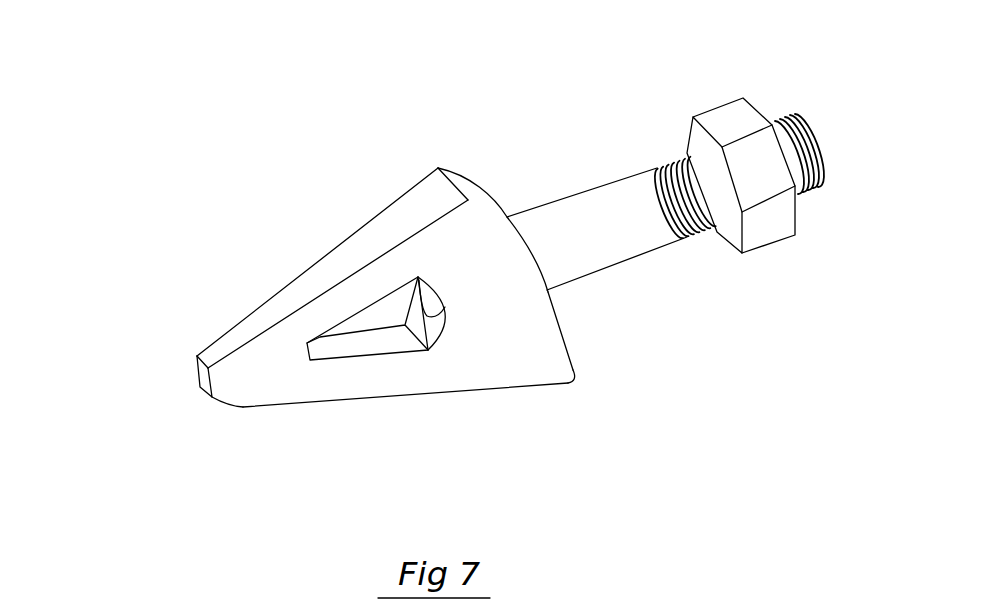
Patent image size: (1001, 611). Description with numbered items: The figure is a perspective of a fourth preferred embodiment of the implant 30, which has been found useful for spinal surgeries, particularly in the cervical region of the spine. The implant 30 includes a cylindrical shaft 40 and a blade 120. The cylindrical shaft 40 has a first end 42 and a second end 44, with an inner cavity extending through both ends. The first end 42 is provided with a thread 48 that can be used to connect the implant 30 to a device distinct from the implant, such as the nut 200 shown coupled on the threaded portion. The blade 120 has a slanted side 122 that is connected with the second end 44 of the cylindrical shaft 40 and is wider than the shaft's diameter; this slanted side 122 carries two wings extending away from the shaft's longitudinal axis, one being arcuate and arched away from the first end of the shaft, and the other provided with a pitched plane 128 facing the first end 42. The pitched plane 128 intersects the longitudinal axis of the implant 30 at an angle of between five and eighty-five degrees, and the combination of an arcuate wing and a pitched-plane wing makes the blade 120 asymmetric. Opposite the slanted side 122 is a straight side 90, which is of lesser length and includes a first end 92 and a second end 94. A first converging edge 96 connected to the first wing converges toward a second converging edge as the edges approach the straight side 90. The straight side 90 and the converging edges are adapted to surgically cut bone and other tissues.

The implant 30 is at (377, 194).
The blade 120 is at (281, 268).
The second end 94 is at (157, 317).
The straight side 90 is at (138, 363).
The first end 92 is at (164, 418).
The first converging edge 96 is at (385, 444).
The second end 44 is at (418, 392).
The pitched plane 128 is at (665, 365).
The slanted side 122 is at (675, 434).
The cylindrical shaft 40 is at (568, 183).
The thread 48 is at (709, 265).
The nut 200 is at (695, 141).
The first end 42 is at (877, 124).